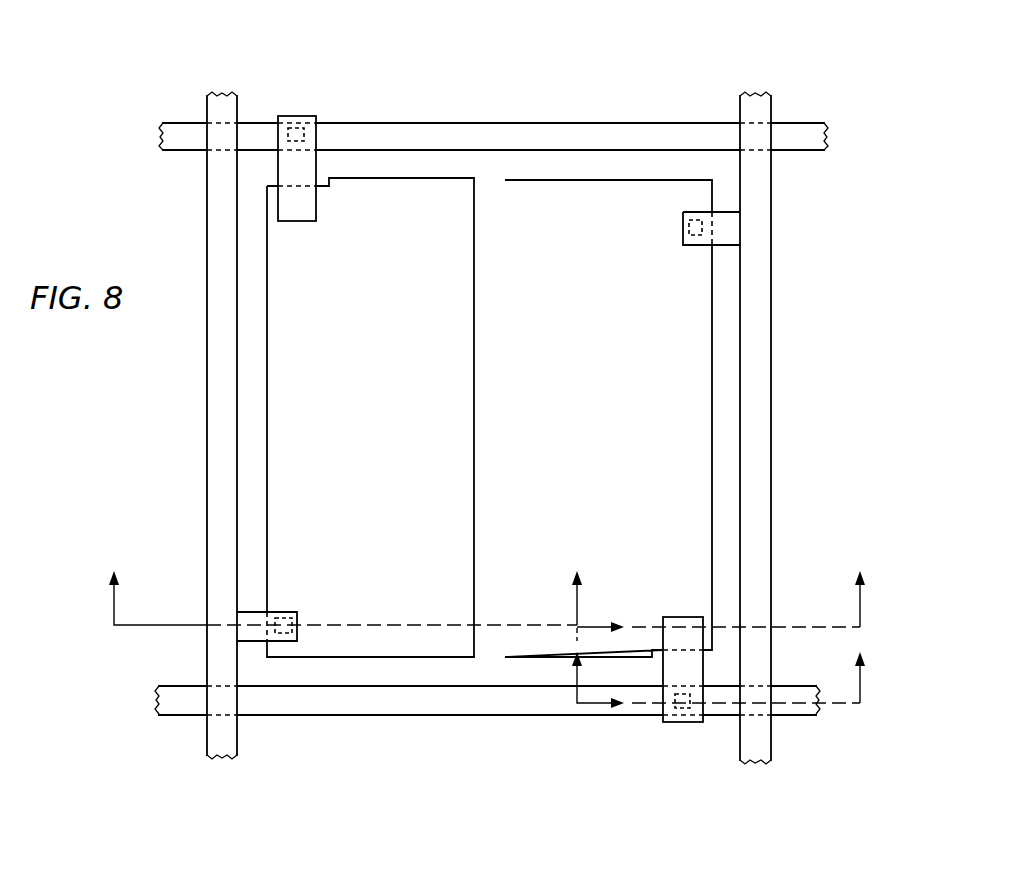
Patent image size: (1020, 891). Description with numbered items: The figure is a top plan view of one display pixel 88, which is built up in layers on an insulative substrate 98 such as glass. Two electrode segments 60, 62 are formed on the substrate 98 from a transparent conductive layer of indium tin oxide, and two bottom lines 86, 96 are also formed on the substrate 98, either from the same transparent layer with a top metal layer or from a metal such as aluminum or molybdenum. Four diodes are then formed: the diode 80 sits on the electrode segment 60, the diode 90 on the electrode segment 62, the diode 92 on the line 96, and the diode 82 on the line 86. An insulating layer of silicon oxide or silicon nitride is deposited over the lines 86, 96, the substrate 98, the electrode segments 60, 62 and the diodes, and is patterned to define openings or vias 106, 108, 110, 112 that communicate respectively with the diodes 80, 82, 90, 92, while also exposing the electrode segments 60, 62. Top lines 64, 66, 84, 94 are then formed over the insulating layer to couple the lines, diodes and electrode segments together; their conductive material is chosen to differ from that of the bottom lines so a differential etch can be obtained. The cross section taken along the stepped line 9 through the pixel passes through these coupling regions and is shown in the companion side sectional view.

The section line 9 is at (501, 629).
The electrode segment 60 is at (344, 399).
The electrode segment 62 is at (619, 401).
The top line 64 is at (307, 207).
The top line 66 is at (683, 668).
The diode 80 is at (312, 611).
The diode 82 is at (328, 134).
The top line 84 is at (220, 400).
The line 86 is at (600, 135).
The pixel 88 is at (497, 108).
The diode 90 is at (676, 252).
The diode 92 is at (654, 731).
The top line 94 is at (760, 432).
The line 96 is at (374, 703).
The insulative substrate 98 is at (490, 336).
The via 106 is at (283, 618).
The via 108 is at (298, 127).
The via 110 is at (688, 227).
The via 112 is at (677, 712).